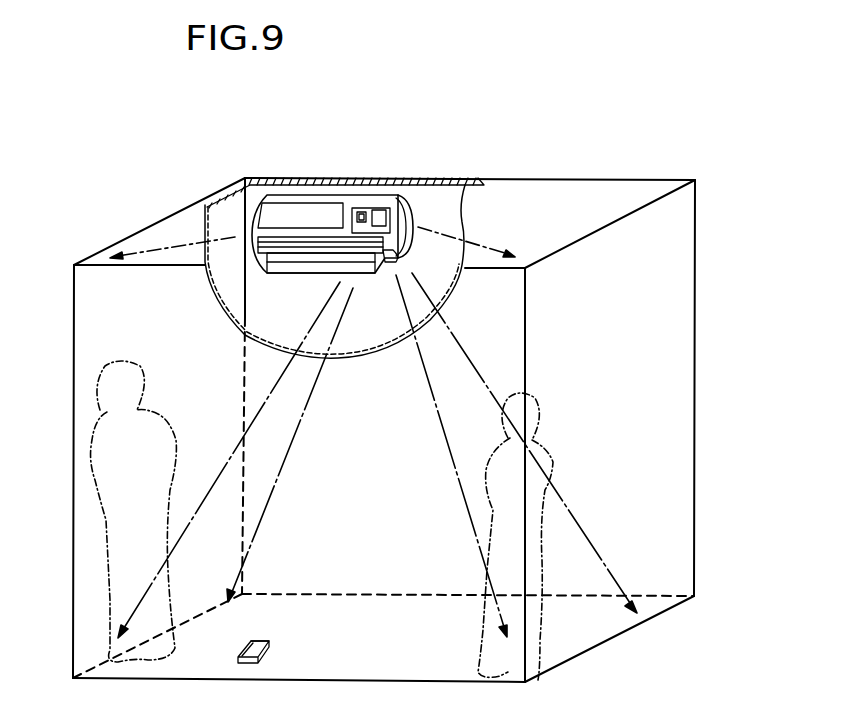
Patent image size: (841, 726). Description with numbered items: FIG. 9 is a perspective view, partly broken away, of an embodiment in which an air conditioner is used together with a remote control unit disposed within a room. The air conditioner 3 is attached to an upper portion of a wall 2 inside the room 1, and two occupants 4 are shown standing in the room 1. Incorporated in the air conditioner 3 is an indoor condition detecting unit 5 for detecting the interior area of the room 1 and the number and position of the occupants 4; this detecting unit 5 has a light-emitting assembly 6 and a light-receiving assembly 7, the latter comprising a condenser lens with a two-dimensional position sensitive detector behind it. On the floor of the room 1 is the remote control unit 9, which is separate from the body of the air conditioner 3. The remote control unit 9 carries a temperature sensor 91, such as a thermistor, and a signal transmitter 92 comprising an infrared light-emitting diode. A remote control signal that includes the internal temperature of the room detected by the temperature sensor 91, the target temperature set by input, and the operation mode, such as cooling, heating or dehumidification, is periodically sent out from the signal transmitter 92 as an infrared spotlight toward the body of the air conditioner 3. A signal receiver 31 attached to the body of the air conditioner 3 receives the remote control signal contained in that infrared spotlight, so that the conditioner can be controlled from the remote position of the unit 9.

The room 1 is at (563, 202).
The wall 2 is at (442, 210).
The air conditioner 3 is at (291, 214).
The indoor condition detecting unit 5 is at (353, 209).
The light-emitting assembly 6 is at (382, 210).
The light-receiving assembly 7 is at (364, 212).
The signal receiver 31 is at (400, 268).
The occupants 4 is at (95, 465).
The remote control unit 9 is at (265, 643).
The temperature sensor 91 is at (238, 660).
The signal transmitter 92 is at (262, 642).